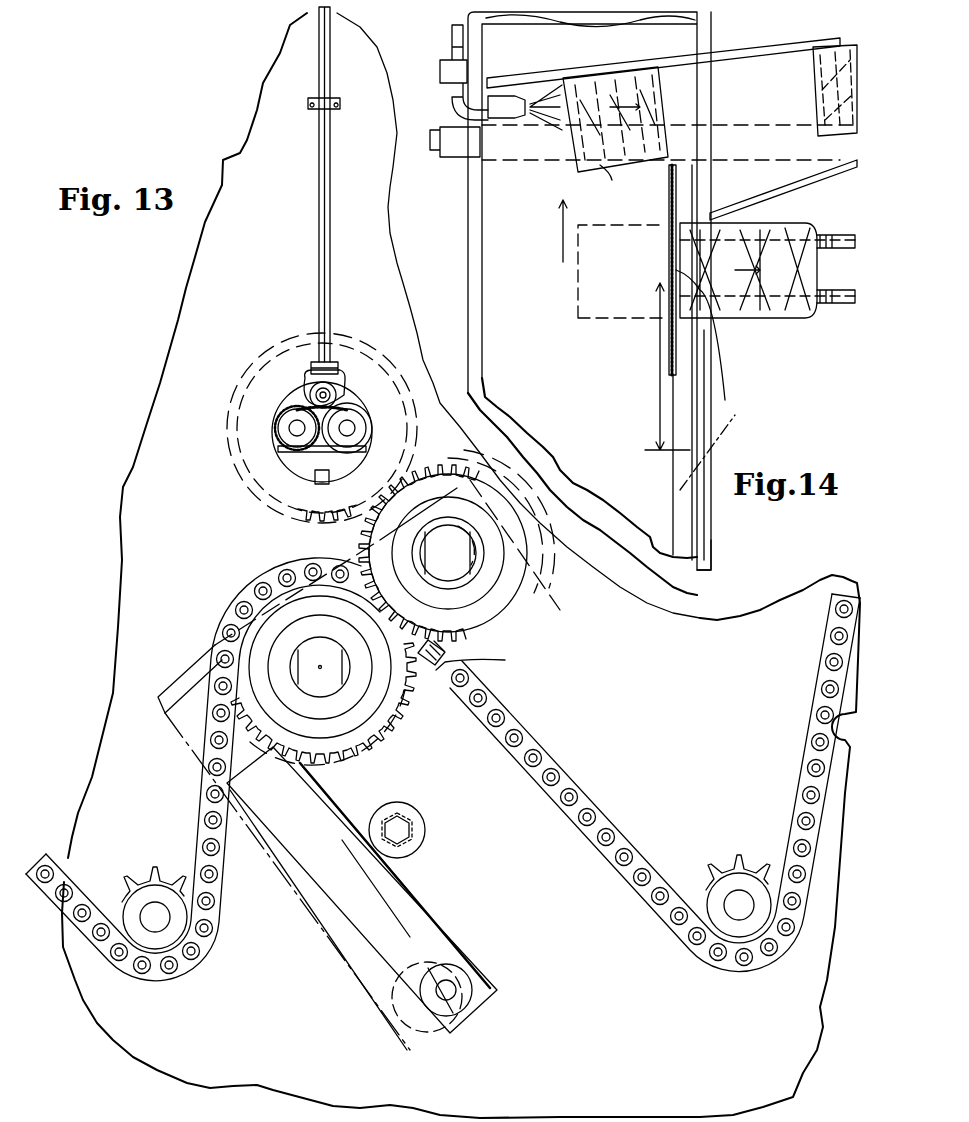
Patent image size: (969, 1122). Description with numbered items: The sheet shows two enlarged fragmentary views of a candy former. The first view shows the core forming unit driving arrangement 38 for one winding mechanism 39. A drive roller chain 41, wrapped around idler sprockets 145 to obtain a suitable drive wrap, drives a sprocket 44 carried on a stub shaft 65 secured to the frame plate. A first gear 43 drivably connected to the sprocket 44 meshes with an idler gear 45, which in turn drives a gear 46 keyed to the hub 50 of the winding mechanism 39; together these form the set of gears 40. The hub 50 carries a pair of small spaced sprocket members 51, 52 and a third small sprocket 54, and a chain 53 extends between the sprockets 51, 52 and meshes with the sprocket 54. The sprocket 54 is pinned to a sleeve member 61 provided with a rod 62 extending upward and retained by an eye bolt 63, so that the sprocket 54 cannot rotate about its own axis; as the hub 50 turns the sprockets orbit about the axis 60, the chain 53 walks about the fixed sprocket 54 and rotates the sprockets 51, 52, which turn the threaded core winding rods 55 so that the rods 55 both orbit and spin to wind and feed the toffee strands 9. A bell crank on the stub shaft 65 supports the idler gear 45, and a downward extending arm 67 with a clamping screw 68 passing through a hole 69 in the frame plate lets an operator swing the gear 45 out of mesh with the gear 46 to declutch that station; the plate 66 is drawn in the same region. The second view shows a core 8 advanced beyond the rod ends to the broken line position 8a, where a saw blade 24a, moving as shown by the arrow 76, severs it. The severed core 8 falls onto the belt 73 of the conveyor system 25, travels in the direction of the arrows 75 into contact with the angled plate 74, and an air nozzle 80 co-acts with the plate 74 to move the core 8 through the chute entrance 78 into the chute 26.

In FIG. 13, the rod 62 is at (318, 225).
In FIG. 13, the eye bolt 63 is at (308, 108).
In FIG. 13, the sleeve member 61 is at (332, 362).
In FIG. 13, the third small sprocket 54 is at (342, 382).
In FIG. 13, the axis 60 is at (336, 395).
In FIG. 13, the winding mechanism 39 is at (272, 443).
In FIG. 13, the hub 50 is at (280, 380).
In FIG. 13, the small sprocket member 51 is at (283, 418).
In FIG. 13, the small sprocket member 52 is at (356, 425).
In FIG. 13, the chain 53 is at (350, 450).
In FIG. 13, the threaded core winding rod 55 is at (296, 442).
In FIG. 14, the threaded core winding rod 55 is at (838, 234).
In FIG. 13, the set of gears 40 is at (300, 522).
In FIG. 13, the idler gear 45 is at (480, 632).
In FIG. 13, the gear 46 is at (440, 462).
In FIG. 13, the first gear 43 is at (455, 660).
In FIG. 13, the plate 66 is at (200, 690).
In FIG. 13, the sprocket 44 is at (390, 728).
In FIG. 13, the stub shaft 65 is at (335, 690).
In FIG. 13, the chain 41 is at (550, 752).
In FIG. 13, the core forming unit driving arrangement 38 is at (648, 918).
In FIG. 13, the idler sprocket 145 is at (152, 866).
In FIG. 13, the arm 67 is at (445, 945).
In FIG. 13, the clamping screw 68 is at (460, 985).
In FIG. 13, the hole 69 is at (448, 1018).
In FIG. 14, the belt 73 is at (606, 418).
In FIG. 14, the angled plate 74 is at (532, 76).
In FIG. 14, the core 8 is at (570, 160).
In FIG. 14, the arrow 75 is at (562, 230).
In FIG. 14, the chute entrance 78 is at (765, 118).
In FIG. 14, the chute 26 is at (857, 166).
In FIG. 14, the air nozzle 80 is at (495, 124).
In FIG. 14, the strand of toffee 9 is at (775, 300).
In FIG. 14, the broken line position 8a is at (600, 325).
In FIG. 14, the arrow 76 is at (660, 352).
In FIG. 14, the saw blade 24a is at (718, 362).
In FIG. 14, the conveyor system 25 is at (700, 540).